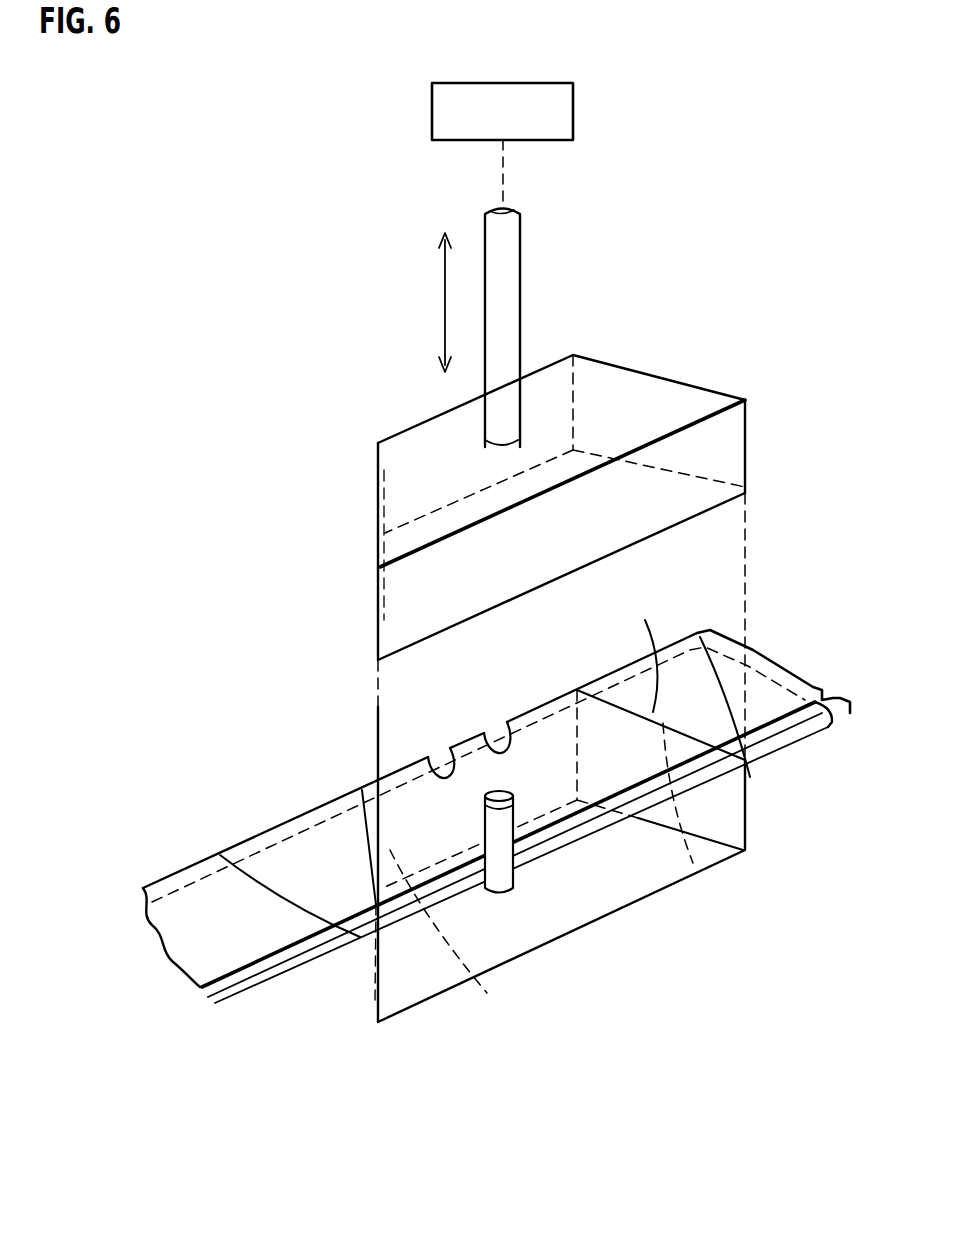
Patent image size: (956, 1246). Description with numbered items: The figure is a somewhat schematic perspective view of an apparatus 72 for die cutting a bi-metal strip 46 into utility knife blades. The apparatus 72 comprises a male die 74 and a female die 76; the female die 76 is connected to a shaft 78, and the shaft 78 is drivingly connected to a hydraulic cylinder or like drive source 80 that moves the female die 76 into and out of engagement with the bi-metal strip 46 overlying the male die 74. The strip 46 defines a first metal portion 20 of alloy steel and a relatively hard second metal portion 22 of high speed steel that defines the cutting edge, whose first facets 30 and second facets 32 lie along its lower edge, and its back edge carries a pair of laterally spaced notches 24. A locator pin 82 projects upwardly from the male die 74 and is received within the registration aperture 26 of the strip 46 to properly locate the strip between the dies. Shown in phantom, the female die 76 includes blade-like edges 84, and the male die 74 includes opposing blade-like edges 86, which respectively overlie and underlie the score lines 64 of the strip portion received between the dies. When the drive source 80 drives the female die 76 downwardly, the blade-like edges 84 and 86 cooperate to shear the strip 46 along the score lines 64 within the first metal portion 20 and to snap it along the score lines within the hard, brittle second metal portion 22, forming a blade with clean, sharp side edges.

The first metal portion 20 is at (777, 630).
The second metal portion 22 is at (786, 671).
The notches 24 is at (495, 740).
The registration aperture 26 is at (485, 798).
The first facets 30 is at (203, 987).
The second facets 32 is at (168, 1025).
The bi-metal strip 46 is at (178, 862).
The score lines 64 is at (375, 867).
The apparatus for die cutting 72 is at (747, 182).
The male die 74 is at (745, 808).
The female die 76 is at (745, 440).
The shaft 78 is at (503, 270).
The drive source 80 is at (573, 112).
The locator pin 82 is at (503, 795).
The blade-like edges 84 is at (600, 453).
The blade-like edges 86 is at (693, 863).